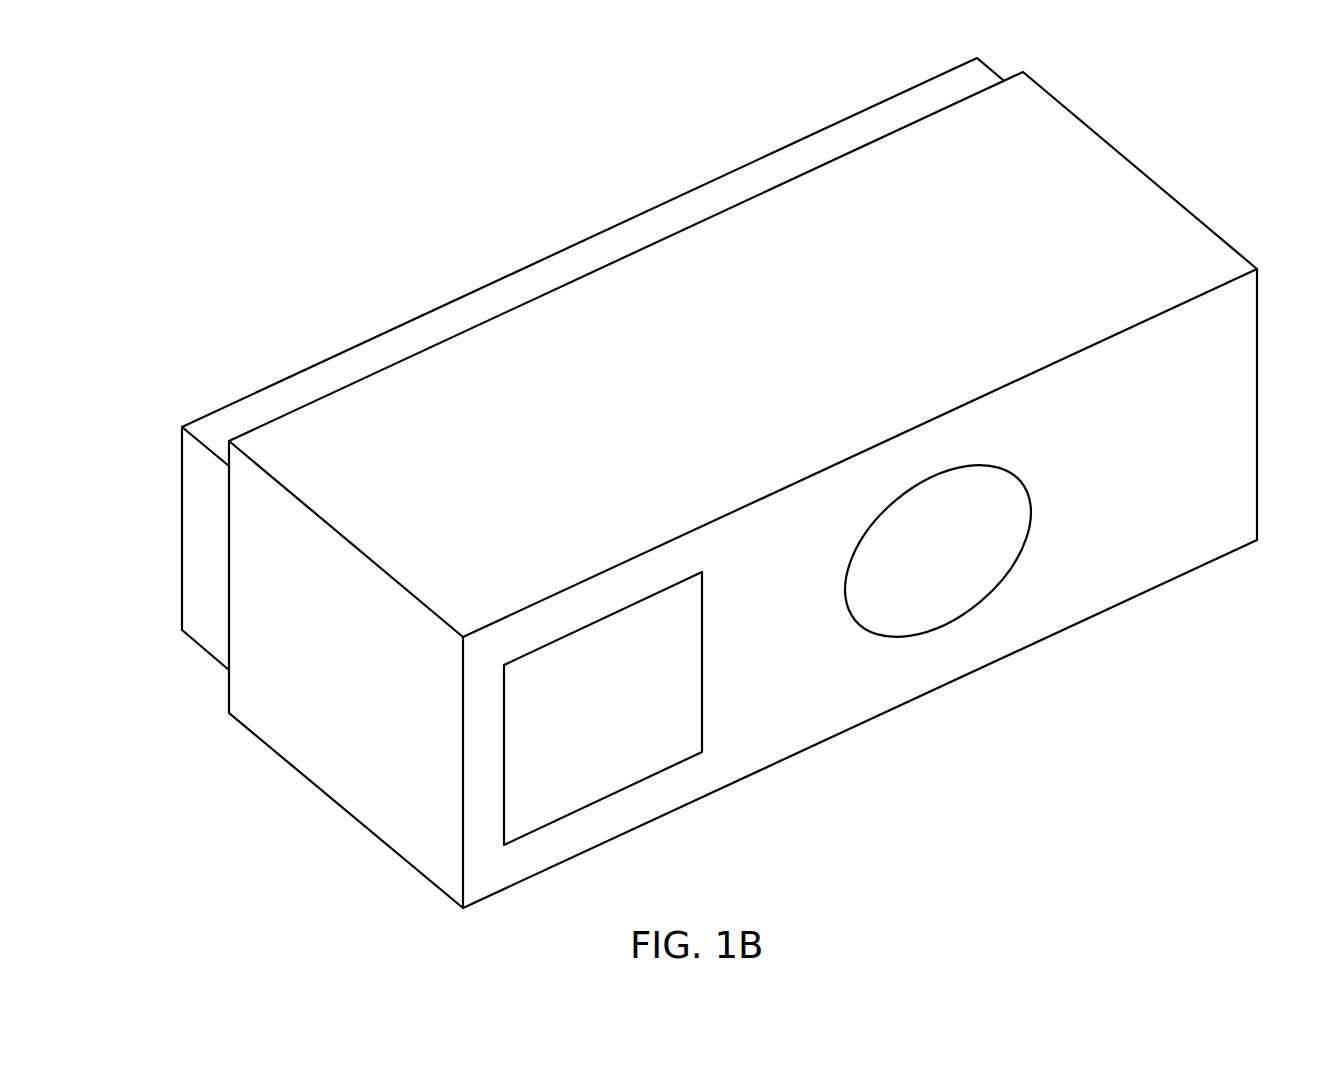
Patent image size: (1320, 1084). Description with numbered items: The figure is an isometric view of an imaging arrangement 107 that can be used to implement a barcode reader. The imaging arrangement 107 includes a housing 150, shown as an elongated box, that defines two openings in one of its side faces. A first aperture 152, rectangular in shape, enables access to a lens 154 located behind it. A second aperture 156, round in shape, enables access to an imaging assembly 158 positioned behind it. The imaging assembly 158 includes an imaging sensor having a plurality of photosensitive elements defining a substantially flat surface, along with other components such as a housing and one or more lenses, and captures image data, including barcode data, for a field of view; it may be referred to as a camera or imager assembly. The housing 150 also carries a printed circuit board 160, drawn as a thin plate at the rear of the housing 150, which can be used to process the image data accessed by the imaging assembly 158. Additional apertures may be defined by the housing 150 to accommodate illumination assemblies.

The imaging arrangement 107 is at (700, 476).
The housing 150 is at (331, 758).
The first aperture 152 is at (585, 808).
The lens 154 is at (613, 727).
The second aperture 156 is at (945, 637).
The imaging assembly 158 is at (983, 565).
The printed circuit board 160 is at (217, 635).